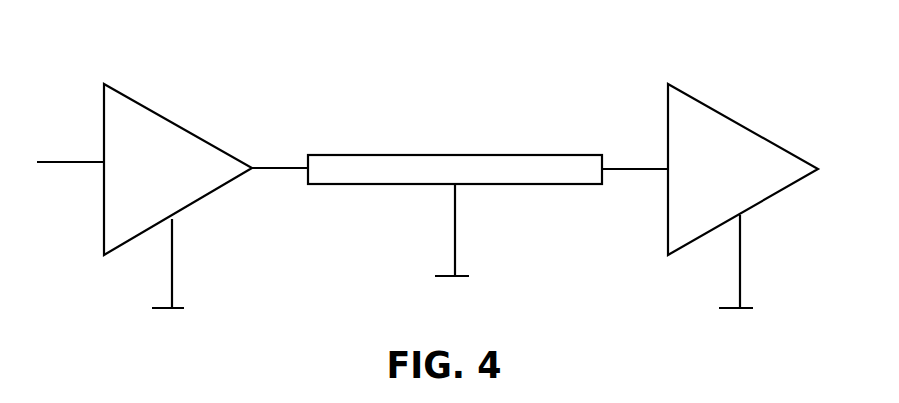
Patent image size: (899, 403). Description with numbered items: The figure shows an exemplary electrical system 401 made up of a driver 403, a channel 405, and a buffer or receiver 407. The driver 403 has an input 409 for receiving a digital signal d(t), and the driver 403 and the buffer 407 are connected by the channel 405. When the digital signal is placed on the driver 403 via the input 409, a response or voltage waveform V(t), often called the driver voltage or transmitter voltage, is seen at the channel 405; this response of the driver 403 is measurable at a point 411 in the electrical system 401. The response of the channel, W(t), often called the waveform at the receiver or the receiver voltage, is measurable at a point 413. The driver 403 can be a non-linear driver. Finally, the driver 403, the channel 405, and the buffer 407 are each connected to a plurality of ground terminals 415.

The electrical system 401 is at (284, 64).
The driver 403 is at (178, 169).
The channel 405 is at (455, 169).
The buffer or receiver 407 is at (743, 169).
The input 409 is at (62, 149).
The point 411 is at (288, 173).
The point 413 is at (656, 166).
The ground terminals 415 is at (172, 280).